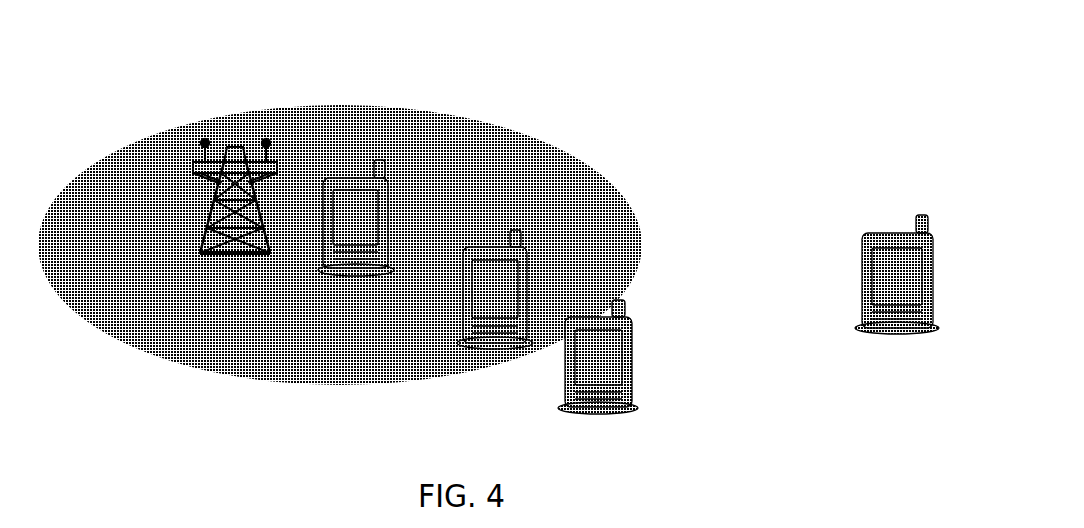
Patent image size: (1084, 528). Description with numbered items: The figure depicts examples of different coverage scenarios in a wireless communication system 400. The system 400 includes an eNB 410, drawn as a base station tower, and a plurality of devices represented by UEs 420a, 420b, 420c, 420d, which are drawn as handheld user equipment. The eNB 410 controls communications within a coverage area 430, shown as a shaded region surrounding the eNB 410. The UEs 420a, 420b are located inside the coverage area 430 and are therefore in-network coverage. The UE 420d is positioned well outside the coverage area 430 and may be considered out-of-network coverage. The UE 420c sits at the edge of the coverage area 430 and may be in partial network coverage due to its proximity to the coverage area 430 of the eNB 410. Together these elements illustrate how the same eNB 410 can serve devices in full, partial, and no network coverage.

The system 400 is at (855, 90).
The eNB 410 is at (232, 268).
The UE 420a is at (352, 276).
The UE 420b is at (475, 247).
The UE 420c is at (585, 412).
The UE 420d is at (887, 330).
The coverage area 430 is at (447, 108).